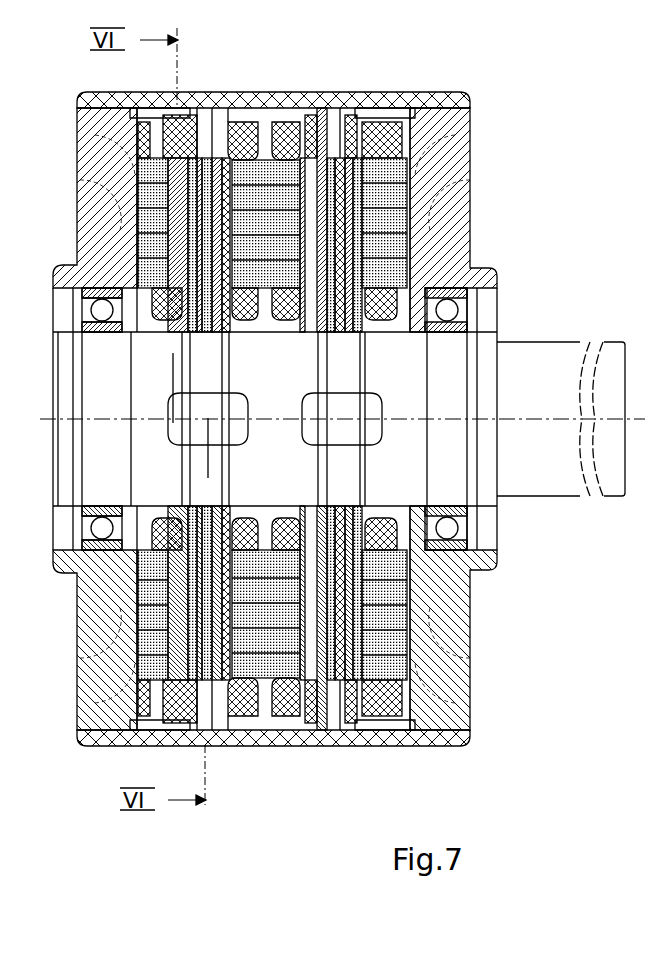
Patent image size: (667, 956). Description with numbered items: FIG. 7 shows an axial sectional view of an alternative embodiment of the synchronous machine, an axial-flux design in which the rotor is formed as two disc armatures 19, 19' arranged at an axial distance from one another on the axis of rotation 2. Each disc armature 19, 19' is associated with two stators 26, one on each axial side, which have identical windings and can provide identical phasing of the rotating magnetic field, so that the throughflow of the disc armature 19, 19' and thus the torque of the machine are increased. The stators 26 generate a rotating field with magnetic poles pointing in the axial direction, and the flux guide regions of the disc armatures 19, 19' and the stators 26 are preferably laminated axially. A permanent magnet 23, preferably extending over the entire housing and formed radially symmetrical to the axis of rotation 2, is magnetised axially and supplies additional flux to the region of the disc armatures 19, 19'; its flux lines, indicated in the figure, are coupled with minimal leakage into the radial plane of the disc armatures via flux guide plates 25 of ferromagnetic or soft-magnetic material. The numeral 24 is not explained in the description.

The axis of rotation 2 is at (540, 355).
The disc armature 19 is at (335, 379).
The disc armature 19' is at (202, 379).
The permanent magnet 23 is at (52, 72).
The lamination stack 24 is at (264, 107).
The flux guide plate 25 is at (505, 707).
The stator 26 is at (132, 203).